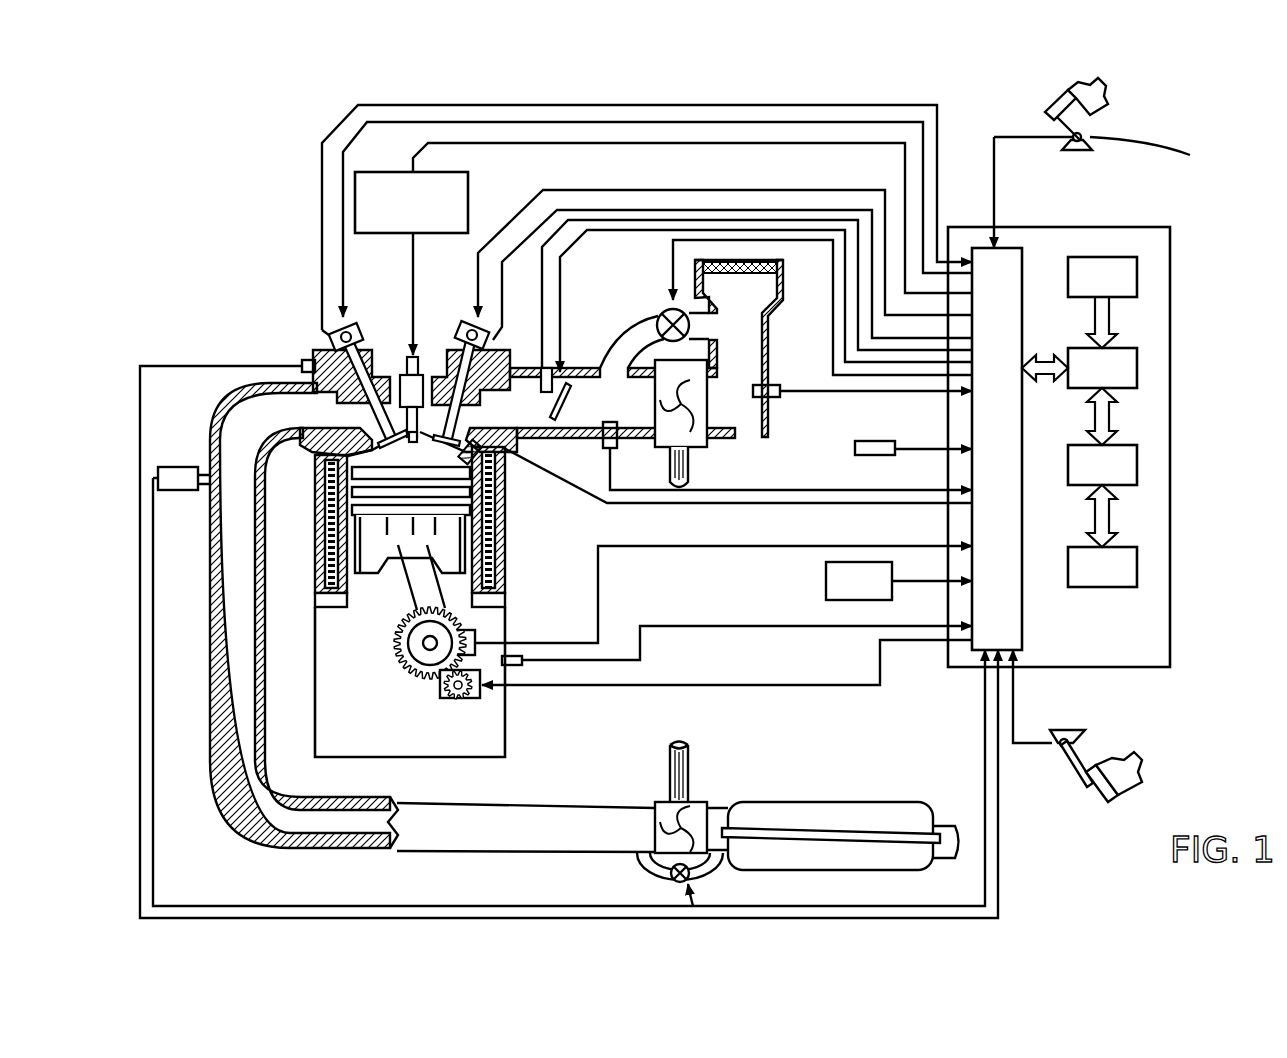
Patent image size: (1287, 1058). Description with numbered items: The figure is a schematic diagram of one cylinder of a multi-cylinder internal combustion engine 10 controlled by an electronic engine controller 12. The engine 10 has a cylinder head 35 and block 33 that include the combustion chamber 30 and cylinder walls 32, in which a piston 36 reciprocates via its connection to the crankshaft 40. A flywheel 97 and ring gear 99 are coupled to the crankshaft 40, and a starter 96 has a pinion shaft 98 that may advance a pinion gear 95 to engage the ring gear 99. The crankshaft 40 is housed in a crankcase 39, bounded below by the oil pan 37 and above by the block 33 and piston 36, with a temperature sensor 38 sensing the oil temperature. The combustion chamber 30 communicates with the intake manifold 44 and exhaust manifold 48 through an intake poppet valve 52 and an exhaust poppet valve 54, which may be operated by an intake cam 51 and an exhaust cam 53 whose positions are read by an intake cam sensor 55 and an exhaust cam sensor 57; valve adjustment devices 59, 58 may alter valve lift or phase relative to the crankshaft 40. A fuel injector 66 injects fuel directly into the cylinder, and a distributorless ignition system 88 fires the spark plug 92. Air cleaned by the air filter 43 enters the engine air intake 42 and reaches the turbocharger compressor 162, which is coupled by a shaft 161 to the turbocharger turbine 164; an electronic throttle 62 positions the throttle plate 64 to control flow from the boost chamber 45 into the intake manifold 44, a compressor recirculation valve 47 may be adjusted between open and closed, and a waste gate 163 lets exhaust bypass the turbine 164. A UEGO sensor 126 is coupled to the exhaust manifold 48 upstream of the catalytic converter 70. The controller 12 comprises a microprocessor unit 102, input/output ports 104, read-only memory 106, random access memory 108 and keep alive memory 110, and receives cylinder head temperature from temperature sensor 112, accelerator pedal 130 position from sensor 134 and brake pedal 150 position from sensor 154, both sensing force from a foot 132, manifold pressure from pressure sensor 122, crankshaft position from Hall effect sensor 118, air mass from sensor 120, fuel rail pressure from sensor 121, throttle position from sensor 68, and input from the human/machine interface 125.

The internal combustion engine 10 is at (252, 303).
The electronic engine controller 12 is at (1170, 227).
The combustion chamber 30 is at (410, 449).
The cylinder walls 32 is at (356, 588).
The block 33 is at (311, 488).
The cylinder head 35 is at (305, 350).
The piston 36 is at (400, 548).
The oil pan 37 is at (506, 742).
The temperature sensor 38 is at (522, 662).
The crankcase 39 is at (330, 690).
The crankshaft 40 is at (416, 670).
The engine air intake 42 is at (619, 283).
The air filter 43 is at (757, 274).
The intake manifold 44 is at (513, 415).
The boost chamber 45 is at (608, 415).
The compressor recirculation valve 47 is at (664, 312).
The exhaust manifold 48 is at (270, 421).
The intake cam 51 is at (467, 326).
The intake poppet valve 52 is at (456, 405).
The exhaust cam 53 is at (352, 322).
The exhaust poppet valve 54 is at (372, 412).
The intake cam sensor 55 is at (487, 333).
The exhaust cam sensor 57 is at (336, 332).
The valve adjustment device 58 is at (353, 338).
The valve adjustment device 59 is at (484, 332).
The electronic throttle 62 is at (570, 400).
The throttle plate 64 is at (562, 417).
The fuel injector 66 is at (509, 469).
The throttle position sensor 68 is at (545, 382).
The catalytic converter 70 is at (770, 802).
The distributorless ignition system 88 is at (372, 172).
The spark plug 92 is at (398, 357).
The pinion gear 95 is at (462, 700).
The starter 96 is at (471, 698).
The flywheel 97 is at (407, 640).
The pinion shaft 98 is at (449, 692).
The ring gear 99 is at (428, 680).
The microprocessor unit 102 is at (1137, 370).
The input/output ports 104 is at (1022, 258).
The read-only memory 106 is at (1137, 270).
The random access memory 108 is at (1137, 465).
The keep alive memory 110 is at (1137, 567).
The temperature sensor 112 is at (300, 362).
The Hall effect sensor 118 is at (477, 636).
The air mass sensor 120 is at (776, 386).
The fuel rail pressure sensor 121 is at (880, 441).
The pressure sensor 122 is at (603, 446).
The human/machine interface 125 is at (899, 581).
The Universal Exhaust Gas Oxygen sensor 126 is at (181, 467).
The accelerator pedal 130 is at (1058, 114).
The human foot 132 is at (1108, 100).
The position sensor 134 is at (1160, 153).
The brake pedal 150 is at (1082, 788).
The position sensor 154 is at (1056, 740).
The shaft 161 is at (670, 465).
The turbocharger compressor 162 is at (695, 420).
The waste gate 163 is at (671, 877).
The turbocharger turbine 164 is at (660, 802).